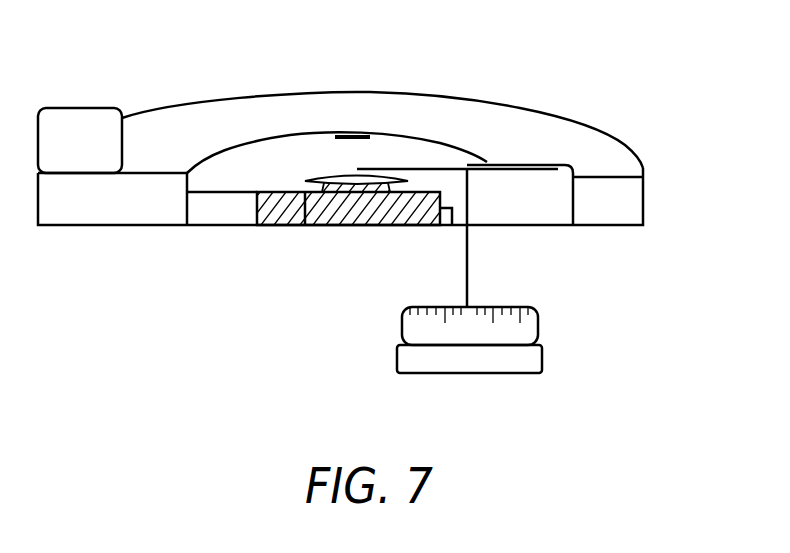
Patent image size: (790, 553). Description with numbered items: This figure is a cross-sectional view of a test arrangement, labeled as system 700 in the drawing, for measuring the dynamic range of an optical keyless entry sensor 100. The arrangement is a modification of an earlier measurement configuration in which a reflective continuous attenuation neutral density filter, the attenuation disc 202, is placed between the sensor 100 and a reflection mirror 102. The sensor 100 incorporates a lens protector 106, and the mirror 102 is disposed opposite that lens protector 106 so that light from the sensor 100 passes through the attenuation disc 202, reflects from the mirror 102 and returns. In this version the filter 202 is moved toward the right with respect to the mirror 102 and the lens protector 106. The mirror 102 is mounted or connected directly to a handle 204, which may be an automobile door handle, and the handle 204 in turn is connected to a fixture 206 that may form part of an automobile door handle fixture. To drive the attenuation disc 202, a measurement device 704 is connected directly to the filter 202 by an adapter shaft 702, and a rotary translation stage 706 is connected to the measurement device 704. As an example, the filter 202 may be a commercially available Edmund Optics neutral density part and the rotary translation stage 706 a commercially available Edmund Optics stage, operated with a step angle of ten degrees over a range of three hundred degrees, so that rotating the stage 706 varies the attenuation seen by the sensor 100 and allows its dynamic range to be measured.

The sensor 100 is at (360, 227).
The mirror 102 is at (361, 132).
The lens protector 106 is at (320, 178).
The attenuation disc 202 is at (442, 165).
The handle 204 is at (548, 140).
The fixture 206 is at (608, 205).
The test system 700 is at (170, 328).
The adapter shaft 702 is at (468, 263).
The measurement device 704 is at (520, 333).
The rotary translation stage 706 is at (523, 362).